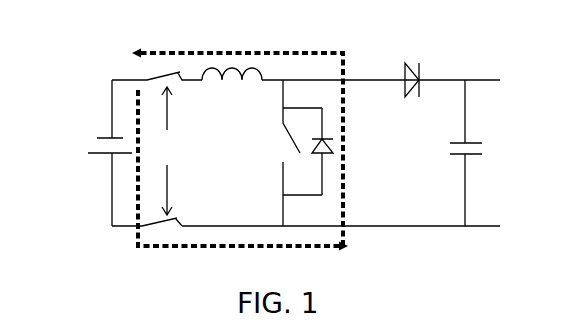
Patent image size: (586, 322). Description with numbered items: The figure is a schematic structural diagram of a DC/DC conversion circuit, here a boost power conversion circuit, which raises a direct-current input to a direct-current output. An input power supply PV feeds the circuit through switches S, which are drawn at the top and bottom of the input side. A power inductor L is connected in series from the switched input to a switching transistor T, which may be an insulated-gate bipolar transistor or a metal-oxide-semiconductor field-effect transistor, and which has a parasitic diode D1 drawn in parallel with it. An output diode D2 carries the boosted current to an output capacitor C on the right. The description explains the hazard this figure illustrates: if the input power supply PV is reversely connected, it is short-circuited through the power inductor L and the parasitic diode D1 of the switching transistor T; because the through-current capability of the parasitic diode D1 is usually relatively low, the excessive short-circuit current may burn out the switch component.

The photovoltaic source PV is at (84, 150).
The switches S is at (157, 149).
The power inductor L is at (232, 49).
The switching transistor T is at (292, 153).
The parasitic diode D1 is at (349, 151).
The diode D2 is at (412, 61).
The capacitor C is at (484, 153).